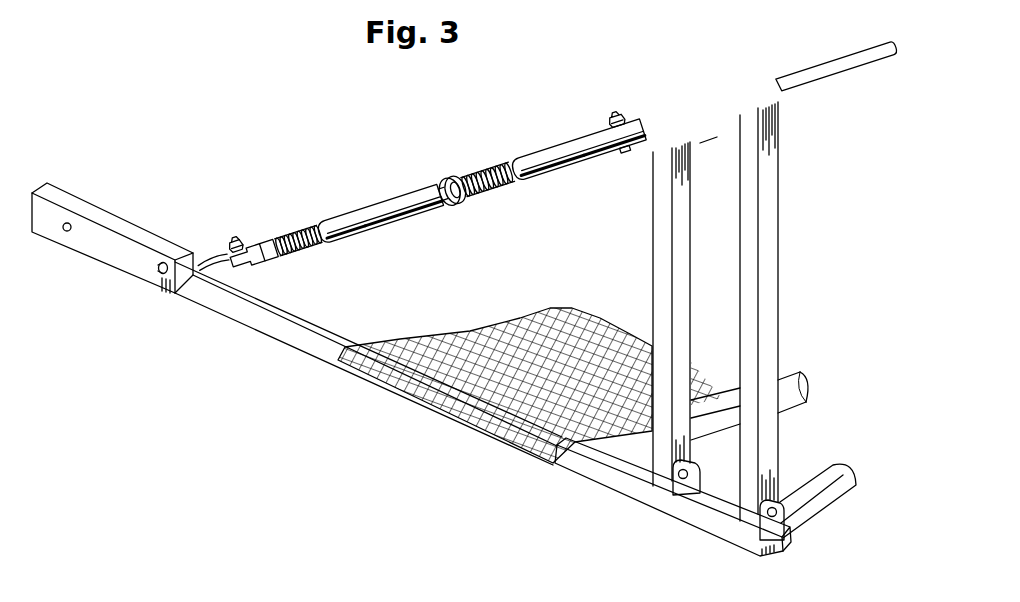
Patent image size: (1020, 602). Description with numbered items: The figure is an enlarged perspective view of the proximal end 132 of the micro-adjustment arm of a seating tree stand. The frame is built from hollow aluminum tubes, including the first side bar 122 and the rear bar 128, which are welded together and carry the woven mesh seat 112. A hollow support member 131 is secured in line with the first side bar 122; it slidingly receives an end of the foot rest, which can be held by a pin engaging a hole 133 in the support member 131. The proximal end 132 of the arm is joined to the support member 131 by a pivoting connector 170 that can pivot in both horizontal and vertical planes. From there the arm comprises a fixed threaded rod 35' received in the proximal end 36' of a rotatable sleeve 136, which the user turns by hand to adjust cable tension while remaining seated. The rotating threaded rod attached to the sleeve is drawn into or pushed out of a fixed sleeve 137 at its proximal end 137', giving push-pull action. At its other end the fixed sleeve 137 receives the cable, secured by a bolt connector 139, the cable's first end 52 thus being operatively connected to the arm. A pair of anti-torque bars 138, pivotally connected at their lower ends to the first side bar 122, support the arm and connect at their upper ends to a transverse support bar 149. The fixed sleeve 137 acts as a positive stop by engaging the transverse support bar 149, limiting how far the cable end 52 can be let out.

The support member 131 is at (60, 200).
The hole 133 is at (64, 235).
The pivoting connector 170 is at (240, 240).
The fixed threaded rod 35' is at (258, 297).
The first side bar 122 is at (302, 343).
The proximal end 132 is at (301, 172).
The rotatable sleeve 136 is at (392, 203).
The proximal end of the rotatable sleeve 36' is at (360, 262).
The fixed sleeve 137 is at (570, 107).
The proximal end of the fixed sleeve 137' is at (553, 208).
The bolt connector 139 is at (747, 77).
The first end of the cable 52 is at (827, 72).
The transverse support bar 149 is at (717, 120).
The anti-torque bar 138 is at (662, 282).
The seat 112 is at (533, 323).
The rear bar 128 is at (785, 385).